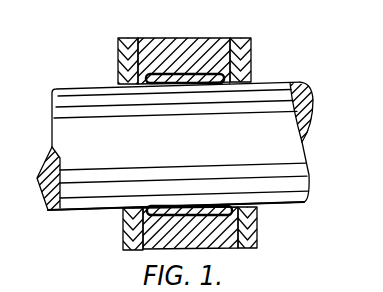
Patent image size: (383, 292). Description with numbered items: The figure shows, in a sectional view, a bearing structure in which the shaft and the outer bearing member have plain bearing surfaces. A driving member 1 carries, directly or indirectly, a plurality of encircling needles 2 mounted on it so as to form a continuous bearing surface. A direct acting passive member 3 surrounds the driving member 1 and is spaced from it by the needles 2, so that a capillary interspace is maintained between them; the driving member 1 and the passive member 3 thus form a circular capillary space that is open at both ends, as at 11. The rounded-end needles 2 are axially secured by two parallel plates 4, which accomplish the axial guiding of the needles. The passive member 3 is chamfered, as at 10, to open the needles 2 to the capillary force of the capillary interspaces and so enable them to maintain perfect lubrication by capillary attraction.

The driving member 1 is at (62, 123).
The needles 2 is at (183, 86).
The passive member 3 is at (201, 52).
The plates 4 is at (130, 55).
The chamfer 10 is at (125, 213).
The open end of capillary space 11 is at (125, 211).